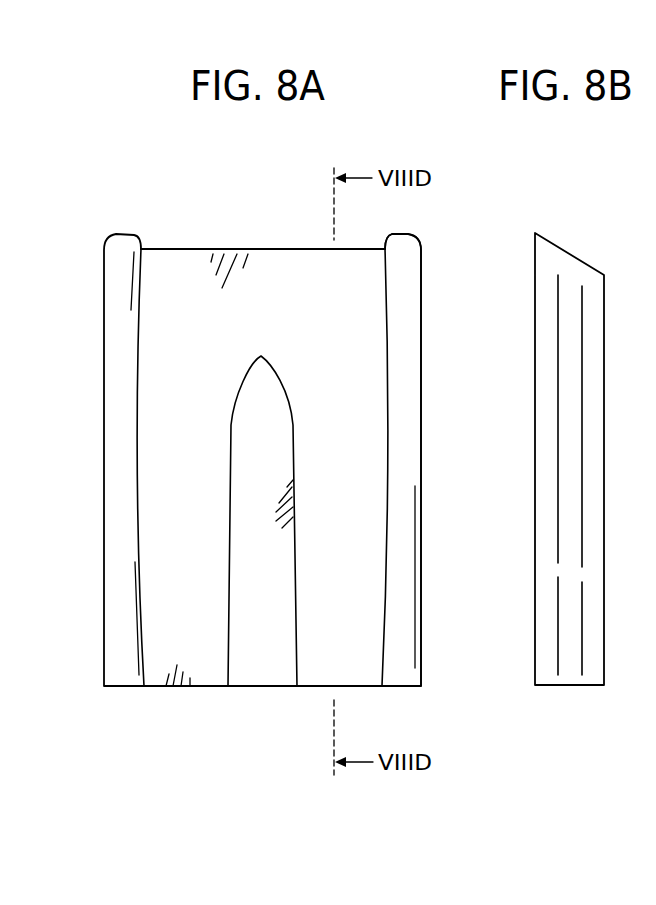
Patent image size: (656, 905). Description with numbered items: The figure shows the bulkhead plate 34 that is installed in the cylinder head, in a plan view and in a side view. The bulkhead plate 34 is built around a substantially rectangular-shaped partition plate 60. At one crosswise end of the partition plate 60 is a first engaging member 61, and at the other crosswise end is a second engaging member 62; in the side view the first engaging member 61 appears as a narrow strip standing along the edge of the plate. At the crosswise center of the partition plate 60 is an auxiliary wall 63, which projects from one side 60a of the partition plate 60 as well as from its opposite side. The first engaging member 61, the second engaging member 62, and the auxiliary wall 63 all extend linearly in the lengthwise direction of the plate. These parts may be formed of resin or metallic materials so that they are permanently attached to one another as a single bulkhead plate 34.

In FIG. 8A, the bulkhead plate 34 is at (420, 224).
In FIG. 8B, the bulkhead plate 34 is at (593, 242).
In FIG. 8A, the partition plate 60 is at (182, 248).
In FIG. 8A, the one side of the partition plate 60a is at (291, 282).
In FIG. 8A, the first engaging member 61 is at (409, 432).
In FIG. 8B, the first engaging member 61 is at (549, 331).
In FIG. 8A, the second engaging member 62 is at (115, 421).
In FIG. 8A, the auxiliary wall 63 is at (278, 420).